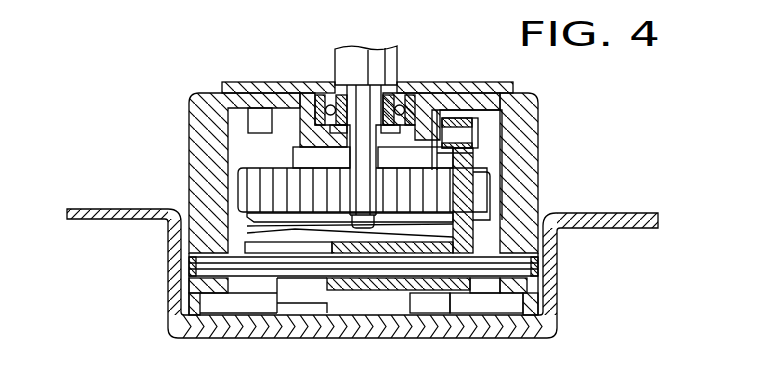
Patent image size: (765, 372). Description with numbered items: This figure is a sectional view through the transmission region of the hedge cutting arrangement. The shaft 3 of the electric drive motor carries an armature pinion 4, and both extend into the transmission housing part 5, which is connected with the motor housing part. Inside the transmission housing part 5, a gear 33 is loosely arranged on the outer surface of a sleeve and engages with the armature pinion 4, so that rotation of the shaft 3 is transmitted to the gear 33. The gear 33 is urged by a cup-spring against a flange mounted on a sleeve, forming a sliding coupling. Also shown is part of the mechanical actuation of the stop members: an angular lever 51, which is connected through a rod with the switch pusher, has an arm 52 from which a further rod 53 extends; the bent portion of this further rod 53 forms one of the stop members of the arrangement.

The shaft 3 is at (388, 69).
The armature pinion 4 is at (360, 178).
The transmission housing part 5 is at (535, 164).
The gear 33 is at (270, 177).
The angular lever 51 is at (443, 259).
The arm 52 is at (462, 168).
The further rod 53 is at (449, 120).